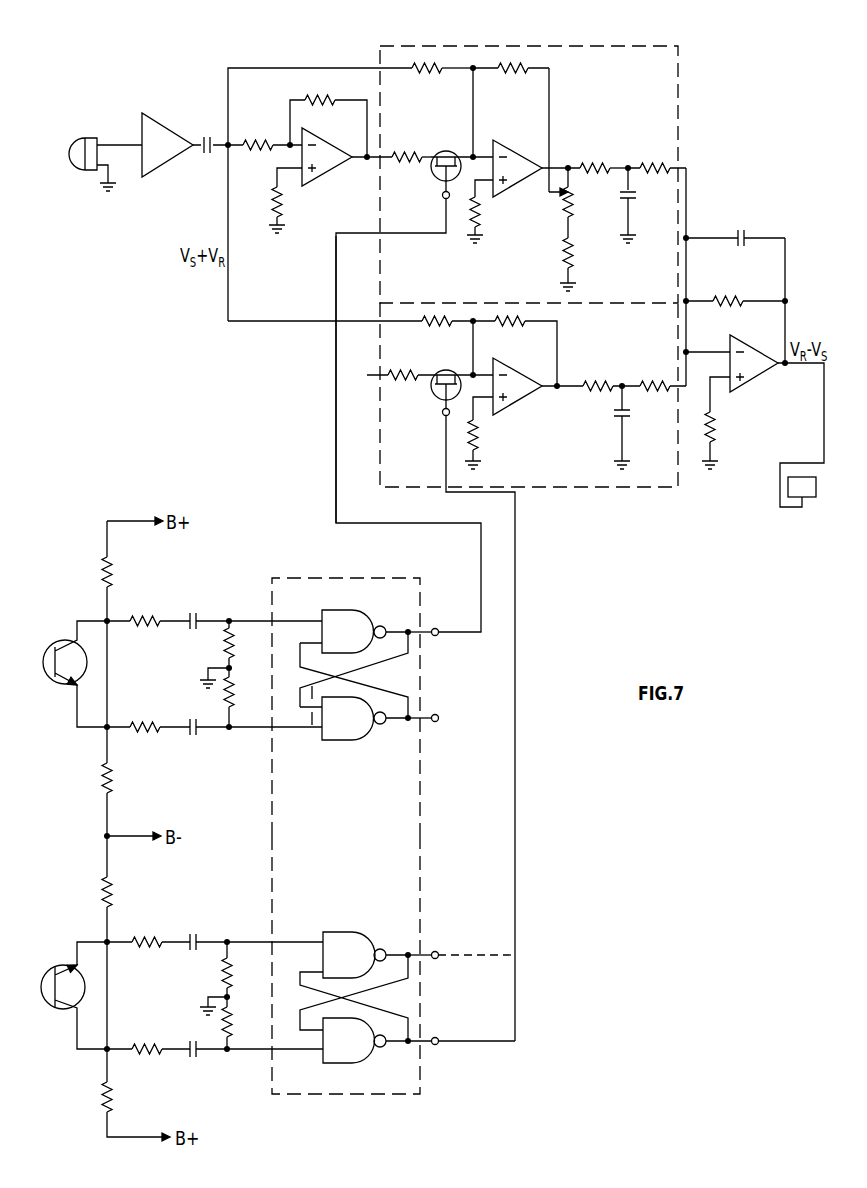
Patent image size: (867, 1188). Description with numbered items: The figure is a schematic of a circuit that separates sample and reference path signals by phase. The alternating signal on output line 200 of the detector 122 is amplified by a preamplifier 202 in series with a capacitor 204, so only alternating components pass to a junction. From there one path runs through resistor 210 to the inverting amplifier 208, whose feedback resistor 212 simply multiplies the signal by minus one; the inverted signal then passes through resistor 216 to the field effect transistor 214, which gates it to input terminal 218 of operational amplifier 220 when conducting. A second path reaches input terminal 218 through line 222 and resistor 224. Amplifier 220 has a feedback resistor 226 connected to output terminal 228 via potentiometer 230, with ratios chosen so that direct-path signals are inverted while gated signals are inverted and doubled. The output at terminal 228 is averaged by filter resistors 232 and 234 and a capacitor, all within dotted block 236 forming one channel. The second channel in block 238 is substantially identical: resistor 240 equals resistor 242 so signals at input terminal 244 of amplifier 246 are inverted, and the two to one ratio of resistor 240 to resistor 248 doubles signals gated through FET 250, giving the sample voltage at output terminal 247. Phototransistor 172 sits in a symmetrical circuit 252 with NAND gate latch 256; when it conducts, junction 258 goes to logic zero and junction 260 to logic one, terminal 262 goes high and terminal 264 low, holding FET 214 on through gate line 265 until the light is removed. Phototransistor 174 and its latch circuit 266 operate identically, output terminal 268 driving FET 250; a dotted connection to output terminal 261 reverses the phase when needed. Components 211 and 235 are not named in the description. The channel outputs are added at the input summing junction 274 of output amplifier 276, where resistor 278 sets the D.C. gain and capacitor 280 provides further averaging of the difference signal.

The detector 122 is at (85, 138).
The output line 200 is at (130, 145).
The preamplifier 202 is at (162, 126).
The capacitor 204 is at (210, 153).
The inverting amplifier 208 is at (322, 178).
The resistor 210 is at (264, 148).
The amplifier output 211 is at (365, 160).
The feedback resistor 212 is at (327, 100).
The field effect transistor 214 is at (455, 140).
The resistor 216 is at (412, 152).
The input terminal 218 is at (475, 149).
The operational amplifier 220 is at (506, 191).
The line 222 is at (318, 68).
The resistor 224 is at (425, 62).
The feedback resistor 226 is at (506, 62).
The output terminal 228 is at (568, 165).
The potentiometer 230 is at (575, 196).
The resistor 232 is at (594, 162).
The resistor 234 is at (655, 163).
The filter capacitor 235 is at (636, 198).
The dotted line block 236 is at (648, 46).
The block 238 is at (637, 487).
The resistor 240 is at (518, 315).
The resistor 242 is at (440, 315).
The input terminal 244 is at (476, 365).
The amplifier 246 is at (508, 410).
The output terminal 247 is at (560, 384).
The resistor 248 is at (399, 372).
The FET 250 is at (440, 406).
The symmetrical circuit 252 is at (200, 580).
The NAND gate latch 256 is at (353, 575).
The junction 258 is at (229, 614).
The junction 260 is at (228, 732).
The output terminal 261 is at (436, 950).
The output terminal 262 is at (435, 628).
The output terminal 264 is at (437, 714).
The gate line 265 is at (481, 570).
The latch circuit 266 is at (370, 1080).
The output terminal 268 is at (438, 1045).
The input summing junction 274 is at (688, 350).
The output amplifier 276 is at (751, 380).
The resistor 278 is at (732, 295).
The capacitor 280 is at (741, 230).
The phototransistor 172 is at (62, 640).
The phototransistor 174 is at (65, 1010).